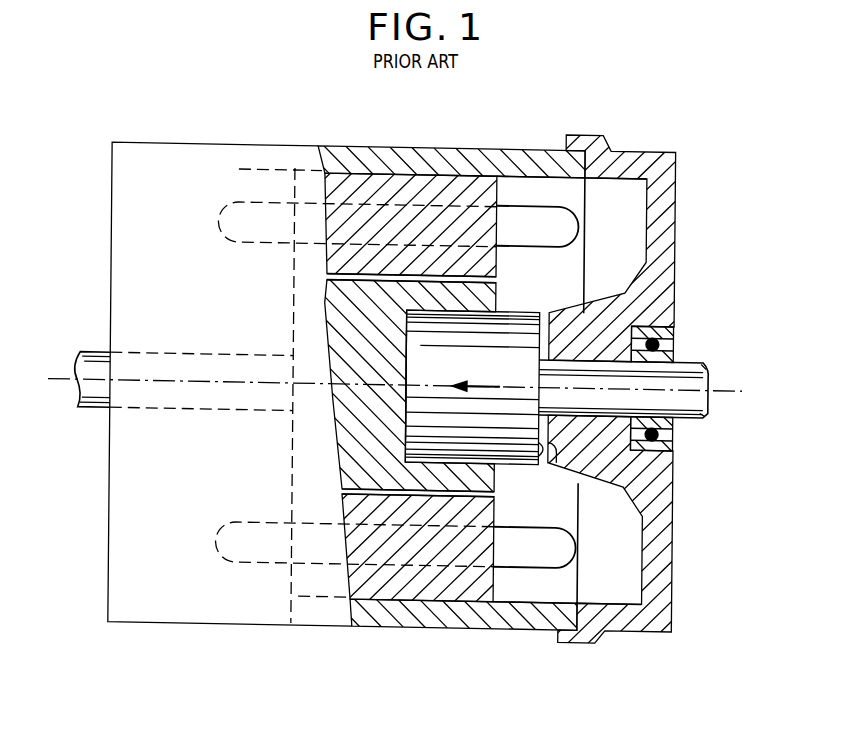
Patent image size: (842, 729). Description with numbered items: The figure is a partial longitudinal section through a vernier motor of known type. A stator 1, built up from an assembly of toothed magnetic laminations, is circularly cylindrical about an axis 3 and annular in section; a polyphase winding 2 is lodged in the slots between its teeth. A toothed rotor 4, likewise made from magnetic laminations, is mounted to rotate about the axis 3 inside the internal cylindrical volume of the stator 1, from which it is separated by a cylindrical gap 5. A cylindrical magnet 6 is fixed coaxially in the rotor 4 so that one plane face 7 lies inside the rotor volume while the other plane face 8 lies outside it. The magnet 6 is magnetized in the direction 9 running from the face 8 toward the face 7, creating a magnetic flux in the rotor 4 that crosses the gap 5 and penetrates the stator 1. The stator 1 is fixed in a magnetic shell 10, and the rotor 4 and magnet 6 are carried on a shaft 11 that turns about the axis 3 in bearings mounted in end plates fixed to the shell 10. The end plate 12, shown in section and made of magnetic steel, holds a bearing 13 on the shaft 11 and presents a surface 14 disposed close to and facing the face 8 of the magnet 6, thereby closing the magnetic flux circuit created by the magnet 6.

The stator 1 is at (446, 189).
The winding 2 is at (547, 197).
The axis 3 is at (60, 381).
The toothed rotor 4 is at (326, 305).
The cylindrical gap 5 is at (496, 276).
The cylindrical magnet 6 is at (520, 348).
The plane face 7 is at (417, 422).
The plane face 8 is at (537, 438).
The direction of magnetization 9 is at (482, 382).
The magnetic shell 10 is at (485, 158).
The shaft 11 is at (678, 390).
The end plate 12 is at (657, 525).
The bearing 13 is at (672, 327).
The surface 14 is at (558, 461).